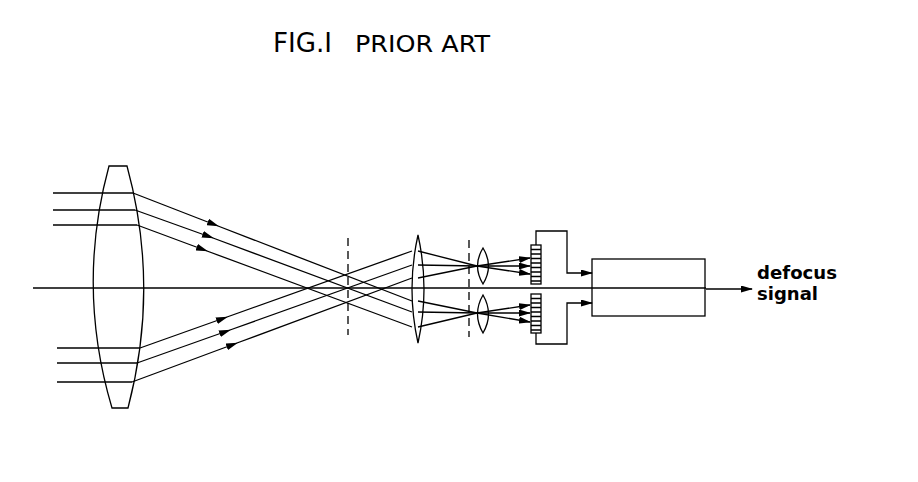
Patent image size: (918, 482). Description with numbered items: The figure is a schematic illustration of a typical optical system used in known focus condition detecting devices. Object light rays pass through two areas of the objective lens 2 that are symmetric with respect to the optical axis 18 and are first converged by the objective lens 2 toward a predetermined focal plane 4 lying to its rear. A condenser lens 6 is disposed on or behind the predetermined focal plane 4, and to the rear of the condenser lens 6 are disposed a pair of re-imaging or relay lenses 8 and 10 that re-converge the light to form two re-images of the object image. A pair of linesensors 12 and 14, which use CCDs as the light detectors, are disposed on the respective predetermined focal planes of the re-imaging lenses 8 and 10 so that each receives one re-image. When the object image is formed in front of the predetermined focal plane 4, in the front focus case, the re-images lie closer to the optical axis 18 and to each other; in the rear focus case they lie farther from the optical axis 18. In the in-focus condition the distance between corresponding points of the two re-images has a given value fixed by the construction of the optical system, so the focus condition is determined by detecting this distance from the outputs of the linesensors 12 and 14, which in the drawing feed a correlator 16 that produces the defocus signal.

The objective lens 2 is at (127, 408).
The predetermined focal plane 4 is at (347, 335).
The condenser lens 6 is at (418, 343).
The re-imaging lens 8 is at (483, 248).
The re-imaging lens 10 is at (483, 335).
The linesensor 12 is at (538, 244).
The linesensor 14 is at (541, 322).
The correlator 16 is at (640, 259).
The optical axis 18 is at (63, 291).